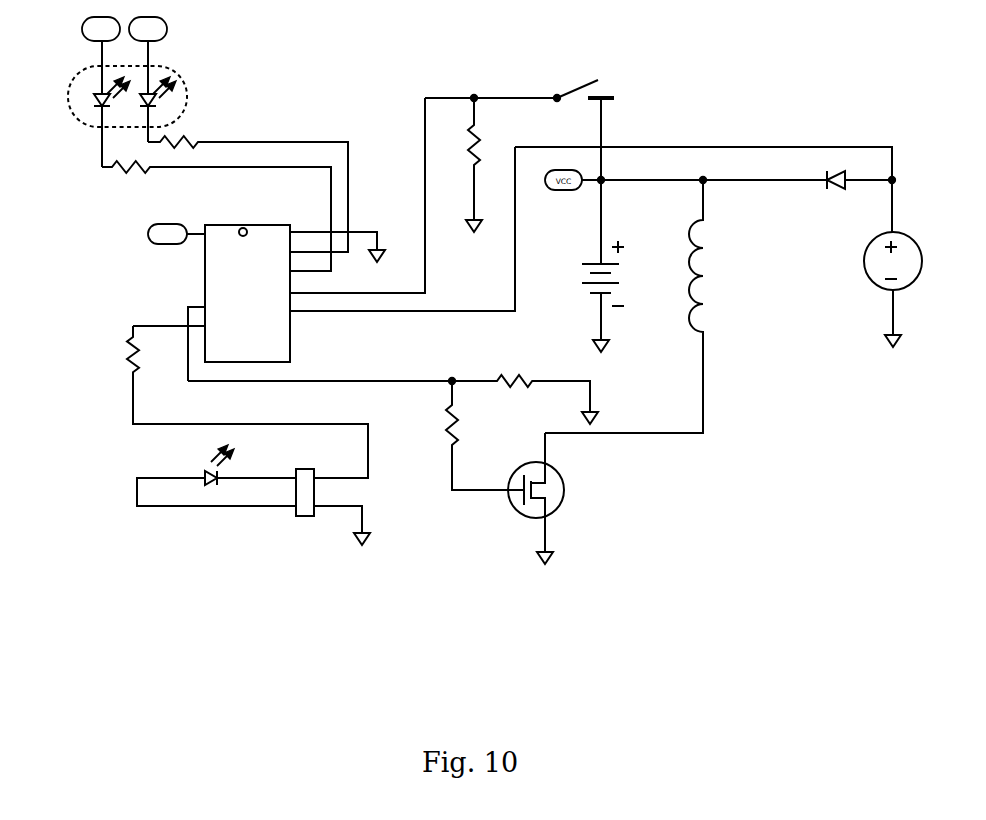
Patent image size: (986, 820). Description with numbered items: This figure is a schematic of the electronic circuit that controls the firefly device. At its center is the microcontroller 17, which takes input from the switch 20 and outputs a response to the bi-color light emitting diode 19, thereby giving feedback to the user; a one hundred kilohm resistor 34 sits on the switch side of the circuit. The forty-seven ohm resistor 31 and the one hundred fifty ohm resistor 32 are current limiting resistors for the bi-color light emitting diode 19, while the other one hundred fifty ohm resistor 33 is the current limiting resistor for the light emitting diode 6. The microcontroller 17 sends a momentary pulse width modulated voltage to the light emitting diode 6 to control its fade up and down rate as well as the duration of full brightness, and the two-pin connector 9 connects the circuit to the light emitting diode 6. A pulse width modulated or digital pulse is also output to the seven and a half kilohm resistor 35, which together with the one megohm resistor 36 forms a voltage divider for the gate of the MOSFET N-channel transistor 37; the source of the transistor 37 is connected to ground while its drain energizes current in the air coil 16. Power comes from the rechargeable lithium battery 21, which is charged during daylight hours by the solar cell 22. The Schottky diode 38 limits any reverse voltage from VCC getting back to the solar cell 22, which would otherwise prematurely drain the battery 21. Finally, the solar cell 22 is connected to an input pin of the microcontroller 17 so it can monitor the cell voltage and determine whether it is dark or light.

The LED2 19 is at (92, 82).
The R4 31 is at (97, 190).
The R5 32 is at (200, 132).
The IC1 17 is at (215, 273).
The R3 33 is at (121, 381).
The LED1 6 is at (201, 484).
The C1 connector 9 is at (289, 508).
The R6 34 is at (463, 130).
The SW1 20 is at (573, 78).
The D1 38 is at (836, 172).
The CELL 22 is at (862, 263).
The B1 21 is at (620, 313).
The L1 16 is at (707, 307).
The R2 36 is at (500, 372).
The R1 35 is at (448, 442).
The U1 37 is at (558, 507).